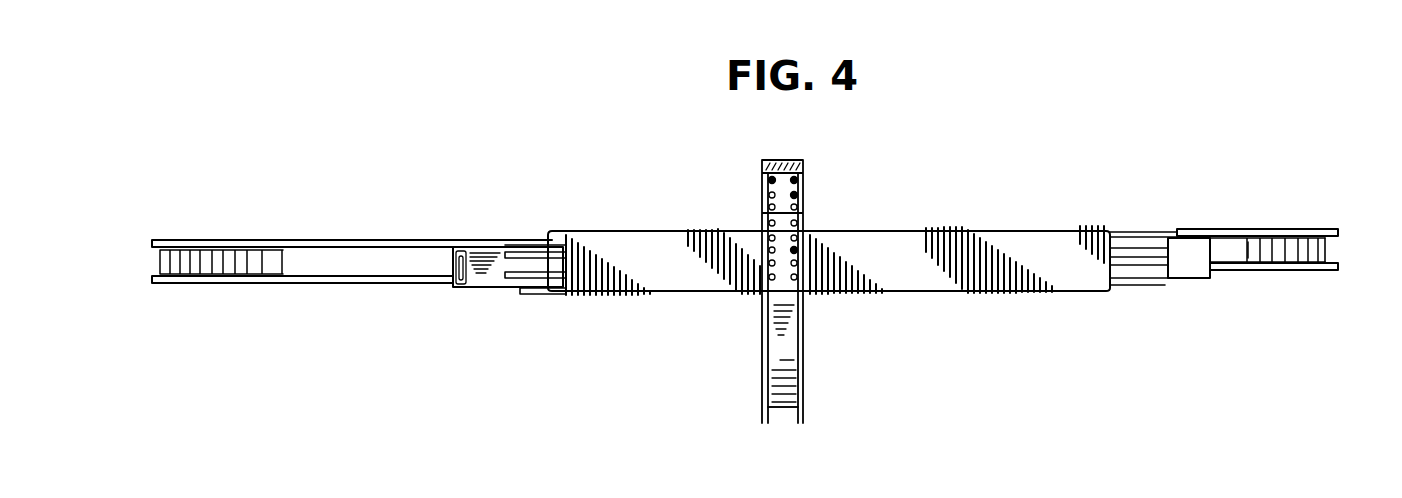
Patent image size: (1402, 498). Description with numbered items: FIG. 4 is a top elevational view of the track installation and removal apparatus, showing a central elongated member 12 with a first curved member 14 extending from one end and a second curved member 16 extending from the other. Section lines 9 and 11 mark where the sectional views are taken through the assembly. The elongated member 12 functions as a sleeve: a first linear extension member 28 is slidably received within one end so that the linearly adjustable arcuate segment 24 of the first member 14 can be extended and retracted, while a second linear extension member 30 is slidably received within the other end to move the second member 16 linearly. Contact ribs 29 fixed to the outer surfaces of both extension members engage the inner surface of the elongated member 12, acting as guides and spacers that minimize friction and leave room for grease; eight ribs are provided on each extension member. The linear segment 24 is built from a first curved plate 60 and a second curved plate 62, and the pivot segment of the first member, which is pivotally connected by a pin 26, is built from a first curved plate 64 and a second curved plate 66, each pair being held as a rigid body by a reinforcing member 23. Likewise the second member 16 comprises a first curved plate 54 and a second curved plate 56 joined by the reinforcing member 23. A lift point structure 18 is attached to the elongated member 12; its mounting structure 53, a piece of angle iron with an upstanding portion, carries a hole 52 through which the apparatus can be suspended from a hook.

The section line 9- 9 is at (690, 172).
The section line 11- 11 is at (135, 263).
The elongated member 12 is at (1022, 228).
The first curved member 14 is at (300, 284).
The second curved member 16 is at (1228, 230).
The lift point structure 18 is at (806, 350).
The reinforcing member 23 is at (782, 408).
The linearly adjustable arcuate segment 24 is at (341, 240).
The pin 26 is at (148, 263).
The first linear extension member 28 is at (486, 287).
The contact ribs 29 is at (560, 252).
The second linear extension member 30 is at (1186, 278).
The hole 52 is at (803, 171).
The mounting structure 53 is at (803, 213).
The first curved plate 54 is at (1340, 228).
The second curved plate 56 is at (1326, 257).
The first curved plate 60 is at (152, 245).
The second curved plate 62 is at (150, 283).
The first curved plate 64 is at (150, 254).
The second curved plate 66 is at (150, 273).